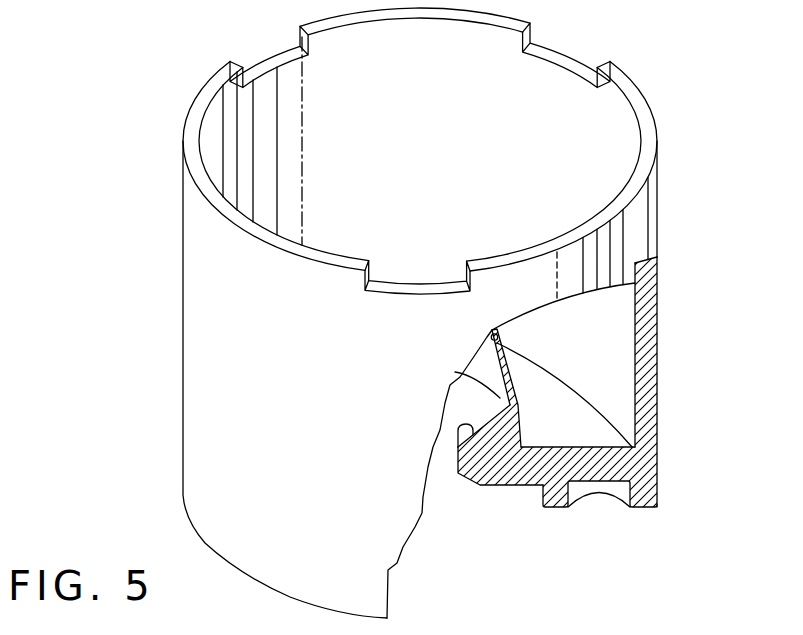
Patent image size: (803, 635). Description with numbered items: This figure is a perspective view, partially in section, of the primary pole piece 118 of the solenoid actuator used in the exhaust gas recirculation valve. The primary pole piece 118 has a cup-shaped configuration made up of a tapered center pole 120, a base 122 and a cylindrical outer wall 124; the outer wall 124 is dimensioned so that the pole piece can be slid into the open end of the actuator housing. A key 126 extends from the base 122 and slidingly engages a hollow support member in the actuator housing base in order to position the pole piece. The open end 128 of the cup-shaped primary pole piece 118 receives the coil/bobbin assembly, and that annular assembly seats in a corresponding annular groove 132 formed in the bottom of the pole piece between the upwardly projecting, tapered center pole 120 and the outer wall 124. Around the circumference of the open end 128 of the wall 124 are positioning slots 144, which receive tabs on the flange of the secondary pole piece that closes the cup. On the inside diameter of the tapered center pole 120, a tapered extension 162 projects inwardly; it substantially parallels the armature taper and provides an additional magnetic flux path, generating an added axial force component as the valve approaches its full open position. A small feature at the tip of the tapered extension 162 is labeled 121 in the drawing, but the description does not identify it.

The primary pole piece 118 is at (175, 406).
The tapered center pole 120 is at (498, 340).
The bead 121 is at (497, 333).
The base 122 is at (513, 470).
The cylindrical outer wall 124 is at (648, 325).
The key 126 is at (647, 493).
The open end 128 is at (602, 137).
The annular groove 132 is at (587, 420).
The positioning slots 144 is at (258, 70).
The tapered extension 162 is at (446, 450).